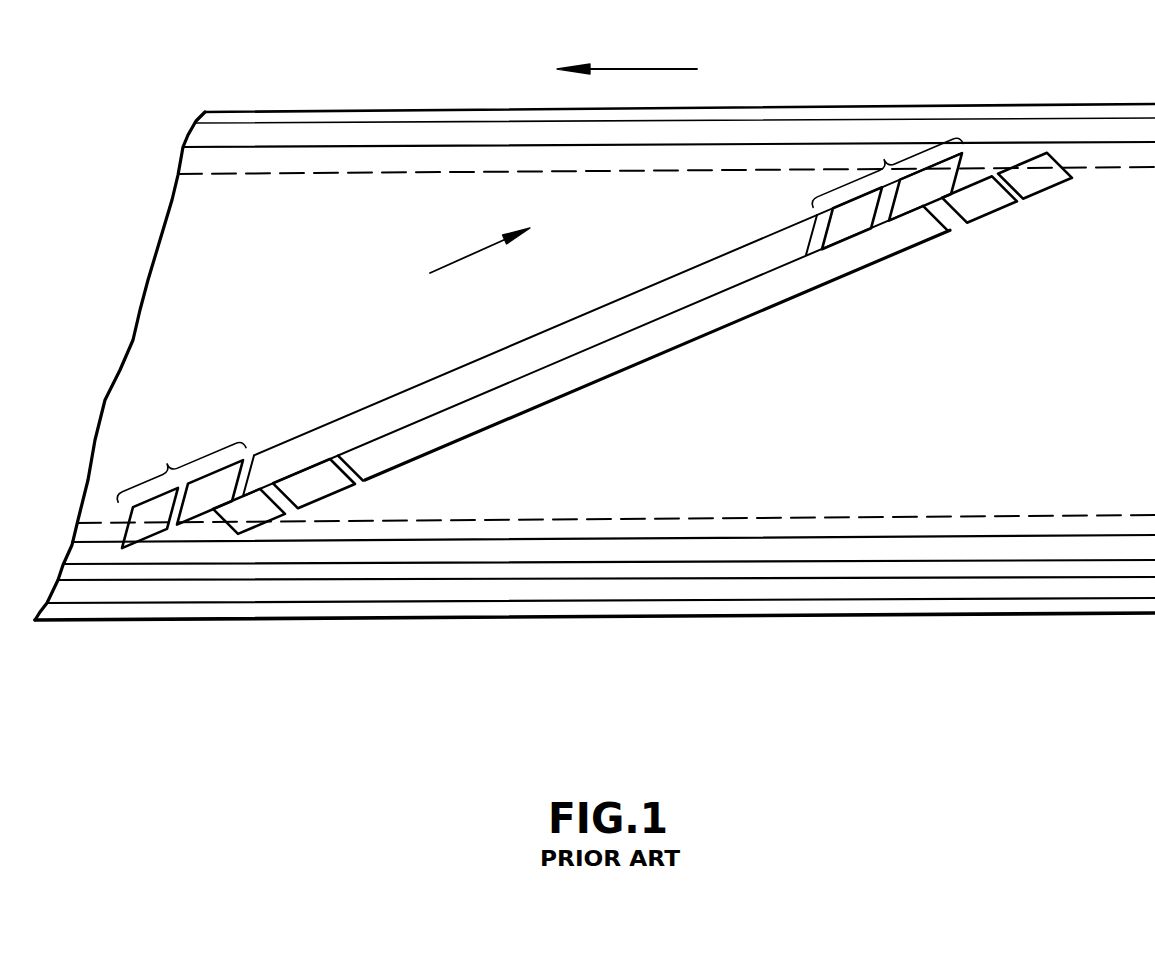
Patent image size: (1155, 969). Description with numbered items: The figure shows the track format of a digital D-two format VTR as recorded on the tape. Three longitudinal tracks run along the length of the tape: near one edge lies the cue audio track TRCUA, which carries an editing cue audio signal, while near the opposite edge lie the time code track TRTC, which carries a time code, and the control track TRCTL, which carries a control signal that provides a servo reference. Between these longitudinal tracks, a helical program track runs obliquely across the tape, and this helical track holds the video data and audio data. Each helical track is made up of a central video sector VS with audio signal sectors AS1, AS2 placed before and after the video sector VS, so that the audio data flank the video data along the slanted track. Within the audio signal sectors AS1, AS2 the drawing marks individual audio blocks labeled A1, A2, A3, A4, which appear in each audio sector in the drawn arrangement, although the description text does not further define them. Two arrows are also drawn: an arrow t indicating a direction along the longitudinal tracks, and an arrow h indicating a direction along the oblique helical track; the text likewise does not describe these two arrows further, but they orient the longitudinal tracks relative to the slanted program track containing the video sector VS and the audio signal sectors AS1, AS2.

The audio channel 1 sector A1 is at (150, 518).
The audio channel 2 sector A2 is at (624, 339).
The audio channel 3 sector A3 is at (615, 355).
The audio channel 4 sector A4 is at (617, 330).
The audio signal sector AS1 is at (173, 463).
The audio signal sector AS2 is at (890, 158).
The video sector VS is at (608, 322).
The cue audio track TRCUA is at (1027, 130).
The time code track TRTC is at (770, 585).
The control track TRCTL is at (926, 547).
The tape running direction t is at (627, 60).
The head scanning direction h is at (480, 250).